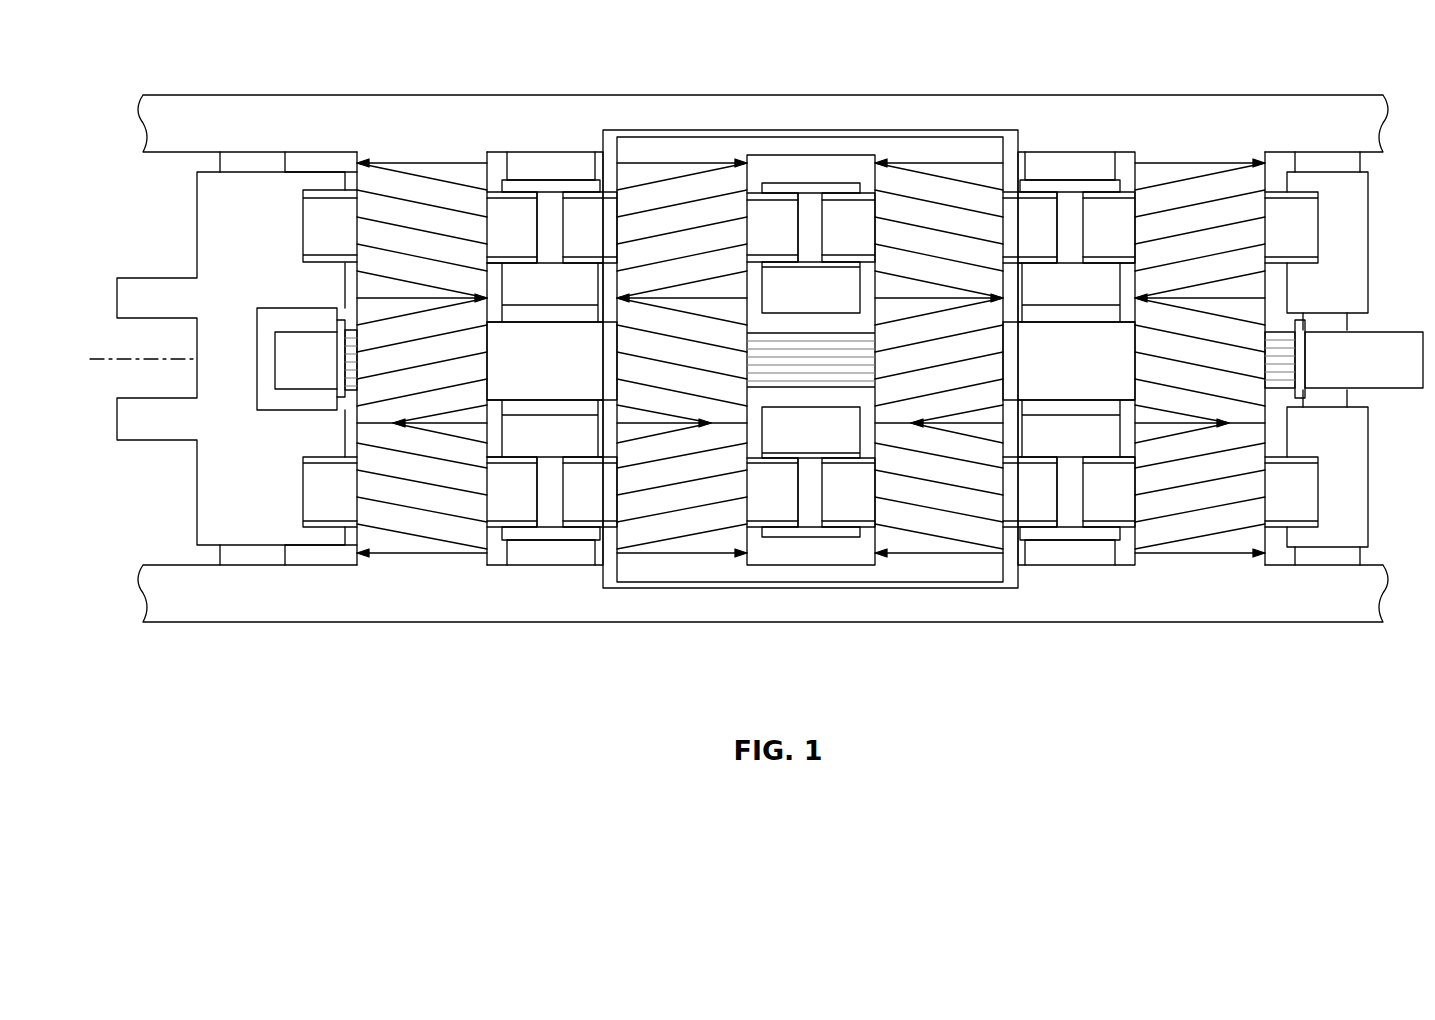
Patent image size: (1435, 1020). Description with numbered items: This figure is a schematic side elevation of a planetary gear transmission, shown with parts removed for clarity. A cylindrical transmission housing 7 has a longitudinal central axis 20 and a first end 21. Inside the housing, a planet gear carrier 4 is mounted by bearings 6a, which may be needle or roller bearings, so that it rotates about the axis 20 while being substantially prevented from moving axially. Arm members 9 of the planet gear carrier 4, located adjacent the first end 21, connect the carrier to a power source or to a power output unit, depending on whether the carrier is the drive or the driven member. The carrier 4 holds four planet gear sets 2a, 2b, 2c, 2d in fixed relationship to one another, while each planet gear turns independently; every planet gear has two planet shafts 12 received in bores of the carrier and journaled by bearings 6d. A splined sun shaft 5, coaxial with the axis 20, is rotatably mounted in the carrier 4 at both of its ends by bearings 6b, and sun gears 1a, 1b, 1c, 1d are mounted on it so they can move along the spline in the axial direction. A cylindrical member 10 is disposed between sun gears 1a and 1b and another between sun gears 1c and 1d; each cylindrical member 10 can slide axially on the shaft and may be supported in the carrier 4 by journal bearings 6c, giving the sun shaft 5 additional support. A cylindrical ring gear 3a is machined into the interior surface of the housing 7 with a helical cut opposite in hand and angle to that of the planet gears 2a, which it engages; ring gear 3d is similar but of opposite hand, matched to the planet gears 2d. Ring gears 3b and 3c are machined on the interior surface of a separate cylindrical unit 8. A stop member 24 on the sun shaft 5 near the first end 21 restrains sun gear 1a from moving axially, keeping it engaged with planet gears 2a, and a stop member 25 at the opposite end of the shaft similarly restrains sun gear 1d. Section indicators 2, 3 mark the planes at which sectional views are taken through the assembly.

The sun gear 1a is at (408, 374).
The sun gear 1b is at (663, 374).
The sun gear 1c is at (918, 374).
The sun gear 1d is at (1188, 374).
The planet gears of the first planet gear set 2a is at (408, 242).
The planet gear set 2b is at (663, 242).
The planet gear set 2c is at (918, 242).
The planet gears of the fourth planet gear set 2d is at (1188, 242).
The cylindrical shaped ring gear 3a is at (408, 159).
The cylindrical shaped ring gear 3b is at (663, 164).
The cylindrical shaped ring gear 3c is at (918, 164).
The cylindrical shaped ring gear 3d is at (1188, 159).
The planet gear carrier 4 is at (213, 264).
The sun shaft 5 is at (296, 374).
The bearings 6a is at (220, 163).
The bearing 6b is at (300, 318).
The bearings 6c is at (542, 315).
The journal bearings 6d is at (303, 193).
The cylindrical transmission housing 7 is at (166, 142).
The cylindrical unit 8 is at (838, 150).
The arm members 9 is at (183, 324).
The cylindrical member 10 is at (561, 374).
The planet shafts 12 is at (498, 213).
The longitudinal central axis 20 is at (115, 360).
The first end 21 is at (168, 226).
The stop member 24 is at (340, 397).
The stop member 25 is at (1300, 398).
The section line 2 is at (661, 663).
The section line 3 is at (560, 663).